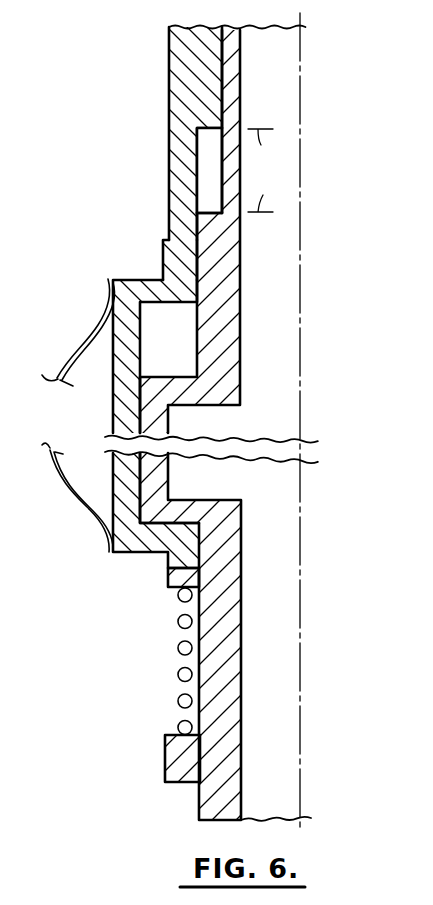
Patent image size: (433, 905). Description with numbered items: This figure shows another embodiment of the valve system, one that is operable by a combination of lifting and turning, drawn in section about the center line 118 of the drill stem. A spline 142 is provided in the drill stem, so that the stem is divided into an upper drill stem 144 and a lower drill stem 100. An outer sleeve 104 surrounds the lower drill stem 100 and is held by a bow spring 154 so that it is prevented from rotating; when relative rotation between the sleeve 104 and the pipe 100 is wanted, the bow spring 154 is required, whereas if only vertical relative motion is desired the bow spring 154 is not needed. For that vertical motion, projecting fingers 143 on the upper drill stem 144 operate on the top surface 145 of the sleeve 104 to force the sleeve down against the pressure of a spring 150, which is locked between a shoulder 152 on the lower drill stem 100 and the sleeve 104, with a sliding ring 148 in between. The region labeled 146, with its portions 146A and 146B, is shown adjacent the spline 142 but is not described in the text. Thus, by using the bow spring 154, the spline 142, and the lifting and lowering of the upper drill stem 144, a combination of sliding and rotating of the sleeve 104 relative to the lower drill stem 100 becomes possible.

The lower drill stem 100 is at (243, 645).
The outer sleeve 104 is at (113, 412).
The center line 118 is at (240, 329).
The spline 142 is at (207, 176).
The projecting fingers 143 is at (177, 213).
The upper drill stem 144 is at (169, 98).
The top surface of the sleeve 145 is at (168, 238).
The inner wall 146 is at (216, 140).
The upper wall portion 146A is at (271, 150).
The lower wall portion 146B is at (271, 193).
The sliding ring 148 is at (165, 580).
The spring 150 is at (177, 648).
The shoulder 152 is at (175, 735).
The bow spring 154 is at (63, 348).